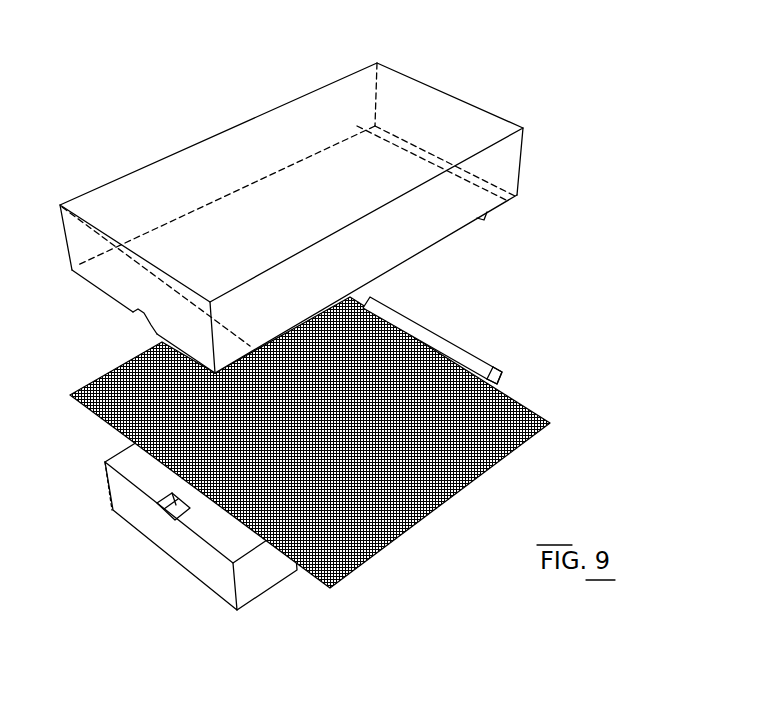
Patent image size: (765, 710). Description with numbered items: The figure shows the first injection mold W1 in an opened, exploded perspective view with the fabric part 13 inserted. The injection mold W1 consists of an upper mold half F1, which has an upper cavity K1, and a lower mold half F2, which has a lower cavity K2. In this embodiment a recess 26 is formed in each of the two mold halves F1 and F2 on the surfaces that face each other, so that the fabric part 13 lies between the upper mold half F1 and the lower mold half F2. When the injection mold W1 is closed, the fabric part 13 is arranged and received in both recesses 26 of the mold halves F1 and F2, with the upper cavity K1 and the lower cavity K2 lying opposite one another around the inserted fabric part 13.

The upper mold half F1 is at (422, 95).
The lower mold half F2 is at (442, 336).
The recess 26 is at (482, 214).
The fabric part 13 is at (537, 411).
The upper cavity K1 is at (136, 317).
The lower cavity K2 is at (160, 505).
The first injection mold W1 is at (570, 95).